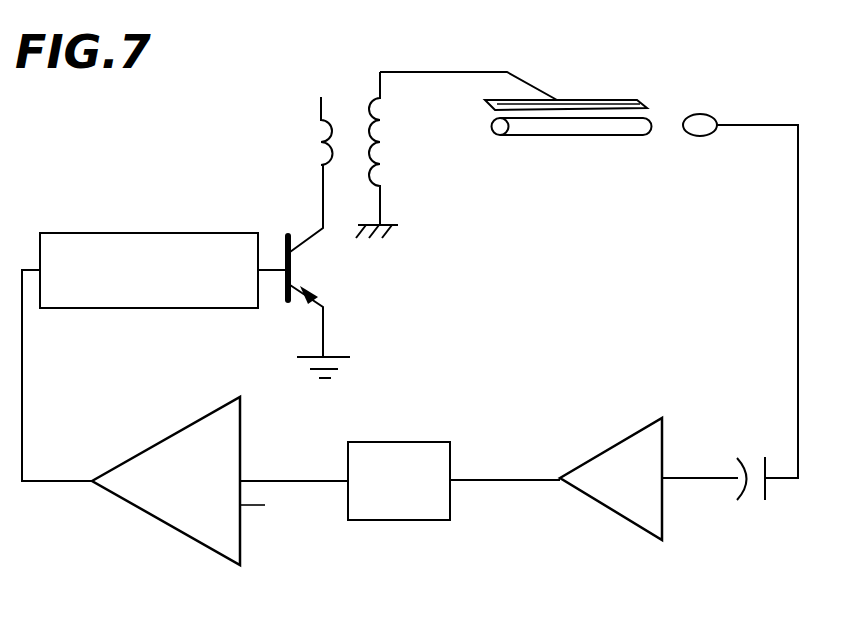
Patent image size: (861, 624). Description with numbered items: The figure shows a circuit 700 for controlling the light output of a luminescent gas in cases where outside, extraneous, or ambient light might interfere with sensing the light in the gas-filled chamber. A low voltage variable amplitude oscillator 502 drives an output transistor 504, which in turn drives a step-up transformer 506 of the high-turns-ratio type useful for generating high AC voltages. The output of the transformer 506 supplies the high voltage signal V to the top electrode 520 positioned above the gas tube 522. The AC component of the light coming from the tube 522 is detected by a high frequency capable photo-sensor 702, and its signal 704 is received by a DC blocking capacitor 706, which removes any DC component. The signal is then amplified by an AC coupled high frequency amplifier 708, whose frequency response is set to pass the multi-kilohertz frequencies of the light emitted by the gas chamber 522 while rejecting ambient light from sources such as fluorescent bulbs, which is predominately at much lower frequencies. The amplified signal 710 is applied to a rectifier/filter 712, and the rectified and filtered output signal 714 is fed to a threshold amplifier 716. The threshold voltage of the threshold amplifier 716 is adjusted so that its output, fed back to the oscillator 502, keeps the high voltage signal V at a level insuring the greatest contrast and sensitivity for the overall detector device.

The circuit 700 is at (92, 117).
The variable amplitude oscillator 502 is at (145, 233).
The output transistor 504 is at (283, 232).
The step-up transformer 506 is at (350, 120).
The top electrode 520 is at (582, 100).
The gas tube 522 is at (573, 137).
The photo-sensor 702 is at (693, 114).
The signal 704 is at (797, 283).
The DC blocking capacitor 706 is at (770, 458).
The AC coupled high frequency amplifier 708 is at (603, 450).
The amplified signal 710 is at (525, 480).
The rectifier/filter 712 is at (427, 442).
The rectified and filtered output signal 714 is at (295, 480).
The threshold amplifier 716 is at (147, 446).